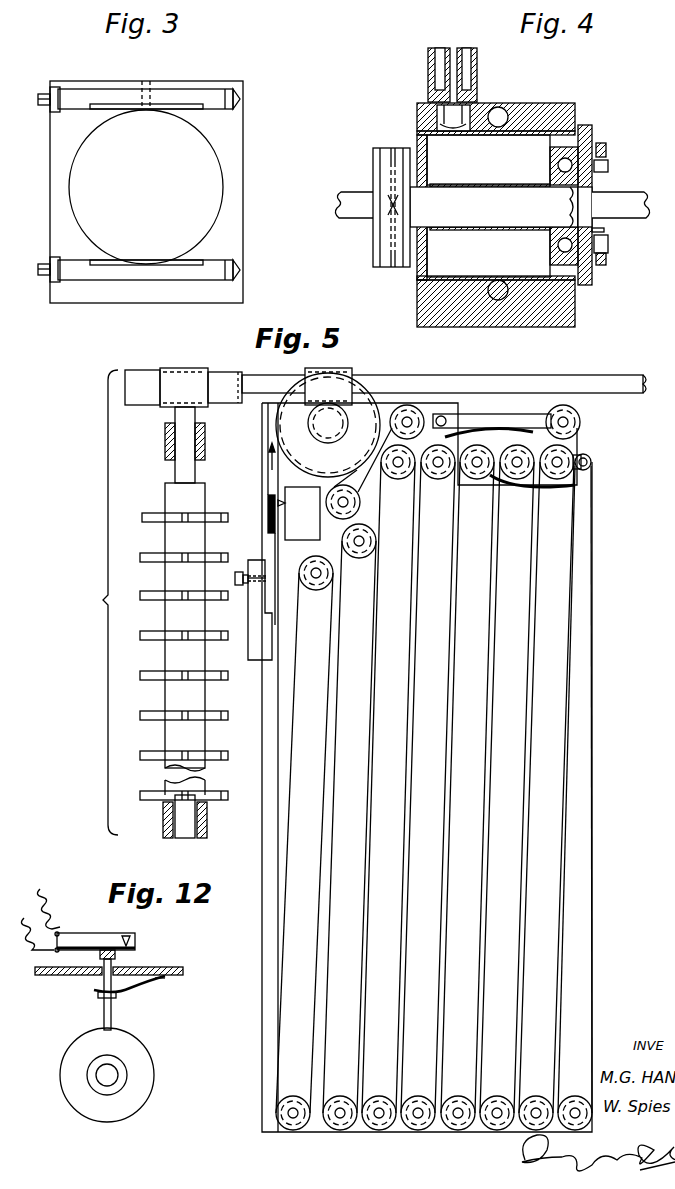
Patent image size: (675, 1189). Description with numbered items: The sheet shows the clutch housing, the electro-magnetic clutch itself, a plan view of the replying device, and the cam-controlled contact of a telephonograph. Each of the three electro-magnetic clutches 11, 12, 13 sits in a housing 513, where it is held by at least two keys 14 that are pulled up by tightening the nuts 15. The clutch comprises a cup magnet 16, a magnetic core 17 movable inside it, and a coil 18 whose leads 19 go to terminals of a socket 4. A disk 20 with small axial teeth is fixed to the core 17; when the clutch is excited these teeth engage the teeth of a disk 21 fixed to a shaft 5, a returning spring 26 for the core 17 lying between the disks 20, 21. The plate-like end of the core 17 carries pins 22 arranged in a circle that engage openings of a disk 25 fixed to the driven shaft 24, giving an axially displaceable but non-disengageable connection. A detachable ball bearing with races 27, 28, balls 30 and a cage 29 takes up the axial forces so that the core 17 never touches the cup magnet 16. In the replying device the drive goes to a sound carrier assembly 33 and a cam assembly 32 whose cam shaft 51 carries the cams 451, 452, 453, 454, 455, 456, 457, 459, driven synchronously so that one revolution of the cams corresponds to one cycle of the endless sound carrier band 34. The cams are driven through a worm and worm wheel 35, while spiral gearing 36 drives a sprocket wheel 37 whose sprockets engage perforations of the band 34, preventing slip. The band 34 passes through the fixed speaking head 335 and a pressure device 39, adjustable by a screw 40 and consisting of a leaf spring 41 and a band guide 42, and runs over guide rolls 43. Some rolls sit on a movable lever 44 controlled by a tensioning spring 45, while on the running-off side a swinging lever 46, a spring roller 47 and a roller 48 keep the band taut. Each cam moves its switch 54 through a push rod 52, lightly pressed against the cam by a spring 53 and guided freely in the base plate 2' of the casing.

In FIG. 12, the base plate 2' is at (109, 984).
In FIG. 4, the socket 4 is at (466, 62).
In FIG. 4, the shaft 5 is at (363, 204).
In FIG. 3, the electro-magnetic clutch 11 is at (196, 187).
In FIG. 3, the electro-magnetic clutch 12 is at (196, 187).
In FIG. 3, the electro-magnetic clutch 13 is at (210, 195).
In FIG. 4, the electro-magnetic clutch 13 is at (420, 108).
In FIG. 3, the key 14 is at (200, 100).
In FIG. 4, the key 14 is at (498, 108).
In FIG. 3, the nut 15 is at (50, 89).
In FIG. 4, the cup magnet 16 is at (420, 282).
In FIG. 4, the magnetic core 17 is at (587, 128).
In FIG. 4, the coil 18 is at (420, 150).
In FIG. 4, the conductor connections 19 is at (452, 134).
In FIG. 4, the disk 20 is at (410, 221).
In FIG. 4, the disk 21 is at (388, 267).
In FIG. 4, the pin 22 is at (607, 166).
In FIG. 4, the driven shaft 24 is at (620, 197).
In FIG. 4, the disk 25 is at (603, 148).
In FIG. 4, the returning spring 26 is at (391, 210).
In FIG. 4, the race 27 is at (605, 230).
In FIG. 4, the race 28 is at (549, 255).
In FIG. 4, the cage 29 is at (601, 264).
In FIG. 4, the ball 30 is at (552, 165).
In FIG. 5, the cam assembly 32 is at (96, 602).
In FIG. 5, the sound carrier assembly 33 is at (600, 650).
In FIG. 5, the sound carrier band 34 is at (276, 992).
In FIG. 5, the worm and worm wheel 35 is at (172, 378).
In FIG. 5, the spiral gearing 36 is at (332, 415).
In FIG. 5, the sprocket wheel 37 is at (278, 427).
In FIG. 5, the pressure device 39 is at (258, 562).
In FIG. 5, the screw 40 is at (244, 588).
In FIG. 5, the leaf spring 41 is at (268, 569).
In FIG. 5, the band guide 42 is at (268, 503).
In FIG. 5, the guide roll 43 is at (581, 415).
In FIG. 5, the movable lever 44 is at (586, 456).
In FIG. 5, the tensioning spring 45 is at (520, 490).
In FIG. 5, the swinging lever 46 is at (525, 418).
In FIG. 5, the spring roller 47 is at (490, 430).
In FIG. 5, the roller 48 is at (276, 910).
In FIG. 5, the disc shaft 51 is at (218, 793).
In FIG. 12, the push rod 52 is at (104, 1014).
In FIG. 12, the spring 53 is at (130, 985).
In FIG. 12, the switch 54 is at (80, 946).
In FIG. 5, the speaking head 335 is at (299, 513).
In FIG. 5, the cam 451 is at (144, 514).
In FIG. 12, the cam 451 is at (135, 1074).
In FIG. 5, the cam 452 is at (141, 554).
In FIG. 12, the cam 452 is at (135, 1074).
In FIG. 5, the cam 453 is at (141, 592).
In FIG. 12, the cam 453 is at (135, 1074).
In FIG. 5, the cam 454 is at (141, 632).
In FIG. 12, the cam 454 is at (135, 1074).
In FIG. 5, the cam 455 is at (141, 672).
In FIG. 12, the cam 455 is at (135, 1074).
In FIG. 5, the cam 456 is at (141, 712).
In FIG. 12, the cam 456 is at (135, 1074).
In FIG. 5, the cam 457 is at (141, 752).
In FIG. 12, the cam 457 is at (135, 1074).
In FIG. 5, the cam 459 is at (141, 800).
In FIG. 12, the cam 459 is at (138, 1055).
In FIG. 3, the housing 513 is at (233, 146).
In FIG. 4, the housing 513 is at (430, 315).